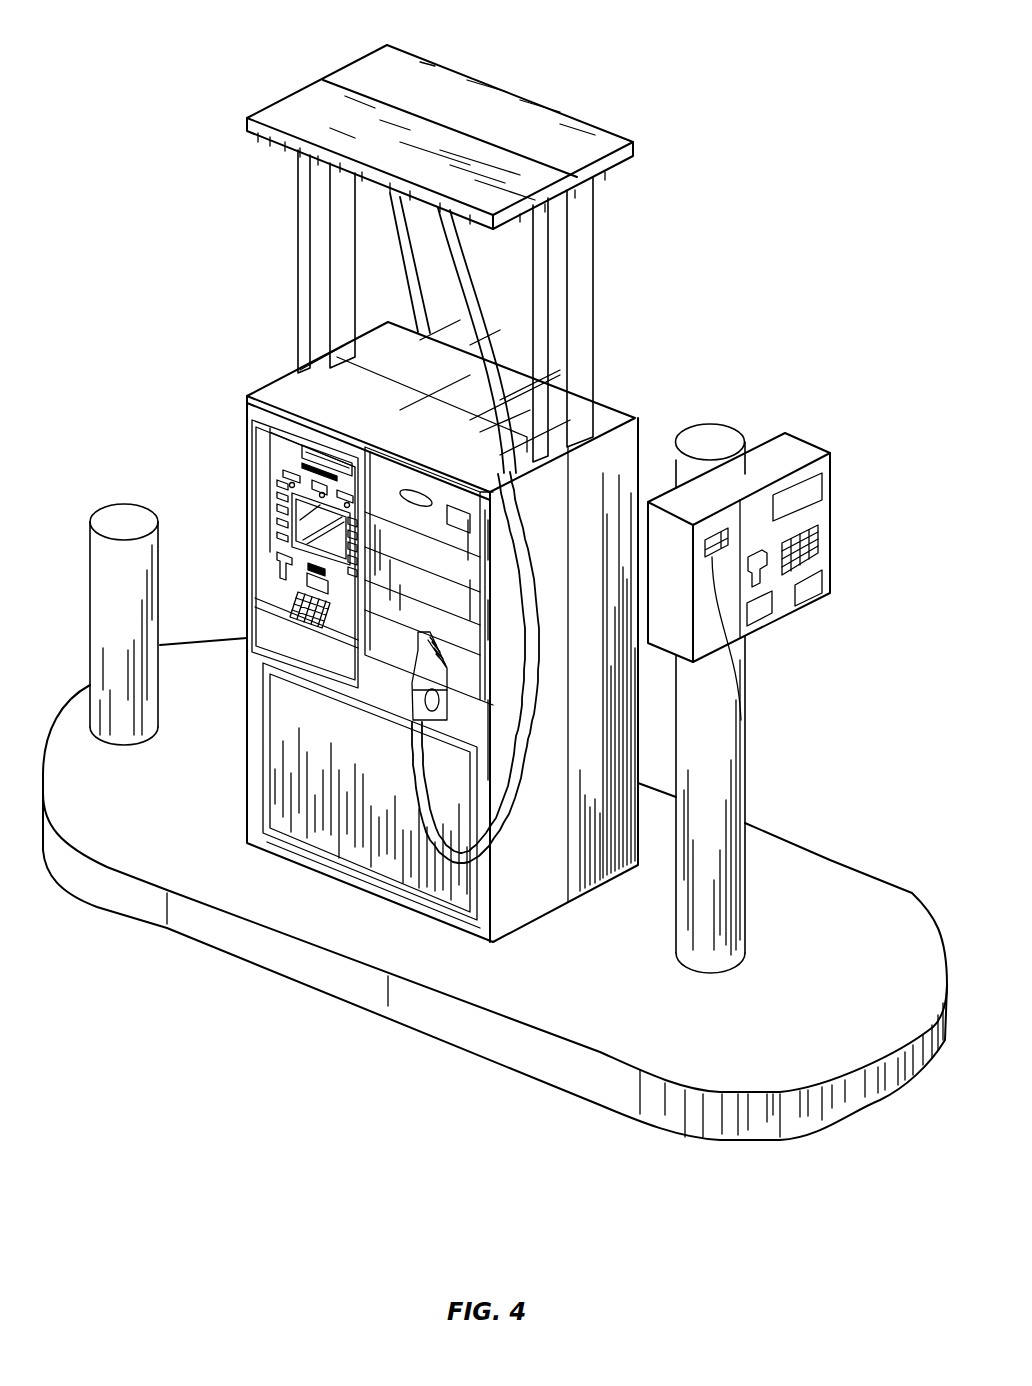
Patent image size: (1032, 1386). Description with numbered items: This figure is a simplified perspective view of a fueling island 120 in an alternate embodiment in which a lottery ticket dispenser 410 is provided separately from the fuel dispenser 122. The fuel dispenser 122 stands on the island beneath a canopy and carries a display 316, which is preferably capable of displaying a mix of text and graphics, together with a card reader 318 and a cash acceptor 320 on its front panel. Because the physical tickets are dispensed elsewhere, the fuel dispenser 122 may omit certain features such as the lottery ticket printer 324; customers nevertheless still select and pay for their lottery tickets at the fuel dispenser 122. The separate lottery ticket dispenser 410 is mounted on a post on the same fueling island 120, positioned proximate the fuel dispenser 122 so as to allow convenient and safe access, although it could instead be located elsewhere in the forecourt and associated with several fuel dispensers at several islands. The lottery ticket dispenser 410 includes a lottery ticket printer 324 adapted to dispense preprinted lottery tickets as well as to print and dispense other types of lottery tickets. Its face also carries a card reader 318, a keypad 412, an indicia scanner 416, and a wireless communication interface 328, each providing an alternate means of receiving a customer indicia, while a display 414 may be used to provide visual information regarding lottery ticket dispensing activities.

The fueling island 120 is at (743, 119).
The fuel dispenser 122 is at (383, 345).
The display 316 is at (303, 512).
The card reader 318 is at (303, 555).
The cash acceptor 320 is at (255, 602).
The wireless communication interface 328 is at (357, 487).
The lottery ticket dispenser 410 is at (798, 437).
The keypad 412 is at (810, 550).
The display 414 is at (808, 492).
The indicia scanner 416 is at (752, 623).
The lottery ticket printer 324 is at (737, 670).